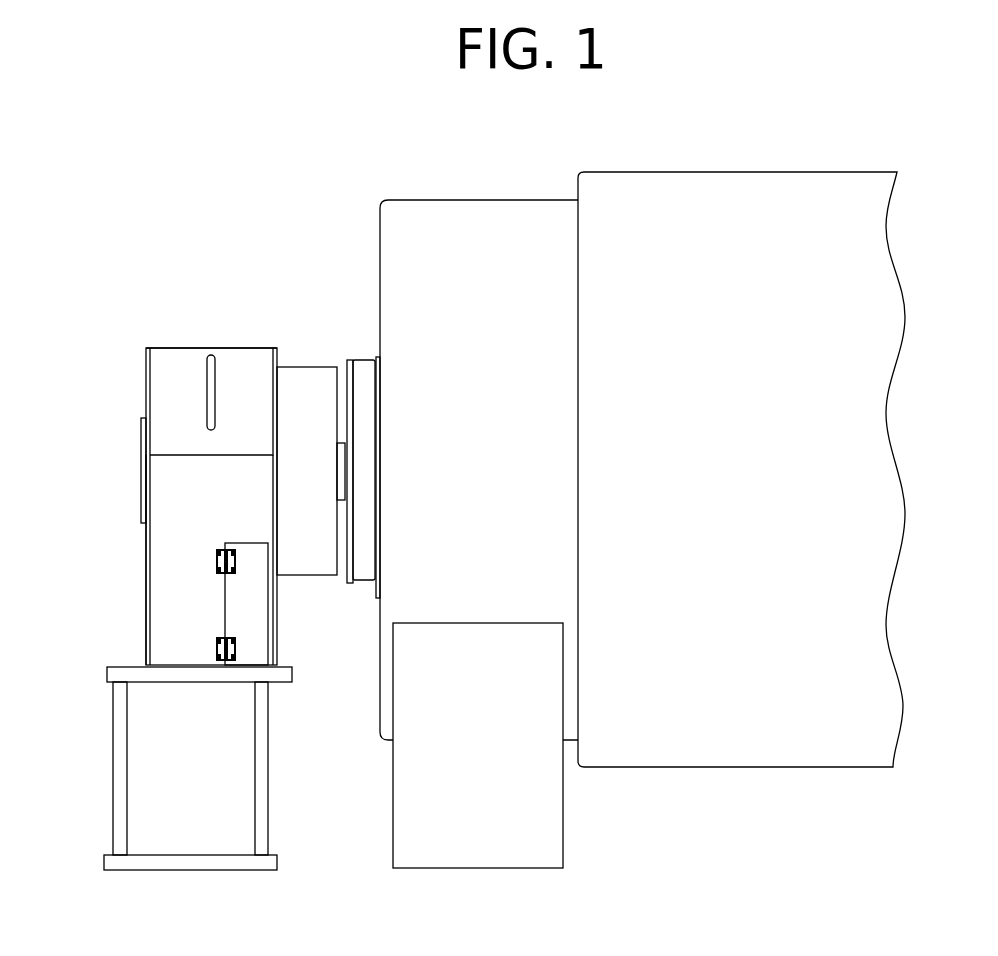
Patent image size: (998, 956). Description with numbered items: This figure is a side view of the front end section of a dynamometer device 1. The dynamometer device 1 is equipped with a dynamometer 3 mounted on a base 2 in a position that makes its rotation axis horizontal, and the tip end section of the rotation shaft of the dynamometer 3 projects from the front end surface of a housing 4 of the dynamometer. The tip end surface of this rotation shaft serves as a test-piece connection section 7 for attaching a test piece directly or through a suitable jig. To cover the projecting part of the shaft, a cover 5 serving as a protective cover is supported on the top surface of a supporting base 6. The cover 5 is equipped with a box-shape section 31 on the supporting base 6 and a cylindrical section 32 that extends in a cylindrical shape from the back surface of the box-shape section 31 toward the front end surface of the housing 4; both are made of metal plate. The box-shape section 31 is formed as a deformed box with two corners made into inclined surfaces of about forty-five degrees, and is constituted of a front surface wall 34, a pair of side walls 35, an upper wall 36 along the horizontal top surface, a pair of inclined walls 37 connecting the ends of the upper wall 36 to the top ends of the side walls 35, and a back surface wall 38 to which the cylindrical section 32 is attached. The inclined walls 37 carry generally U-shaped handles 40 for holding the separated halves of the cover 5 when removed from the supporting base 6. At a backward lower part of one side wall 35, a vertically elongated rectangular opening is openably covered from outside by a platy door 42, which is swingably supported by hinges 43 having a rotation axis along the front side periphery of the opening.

The dynamometer device 1 is at (372, 194).
The base 2 is at (537, 832).
The dynamometer 3 is at (566, 162).
The housing 4 is at (876, 288).
The cover 5 is at (157, 317).
The supporting base 6 is at (118, 730).
The test-piece connection section 7 is at (142, 472).
The box-shape section 31 is at (250, 362).
The cylindrical section 32 is at (312, 378).
The front surface wall 34 is at (147, 622).
The side wall 35 is at (168, 567).
The upper wall 36 is at (168, 347).
The inclined wall 37 is at (175, 377).
The back surface wall 38 is at (273, 638).
The handle 40 is at (211, 355).
The door 42 is at (245, 612).
The hinge 43 is at (218, 552).